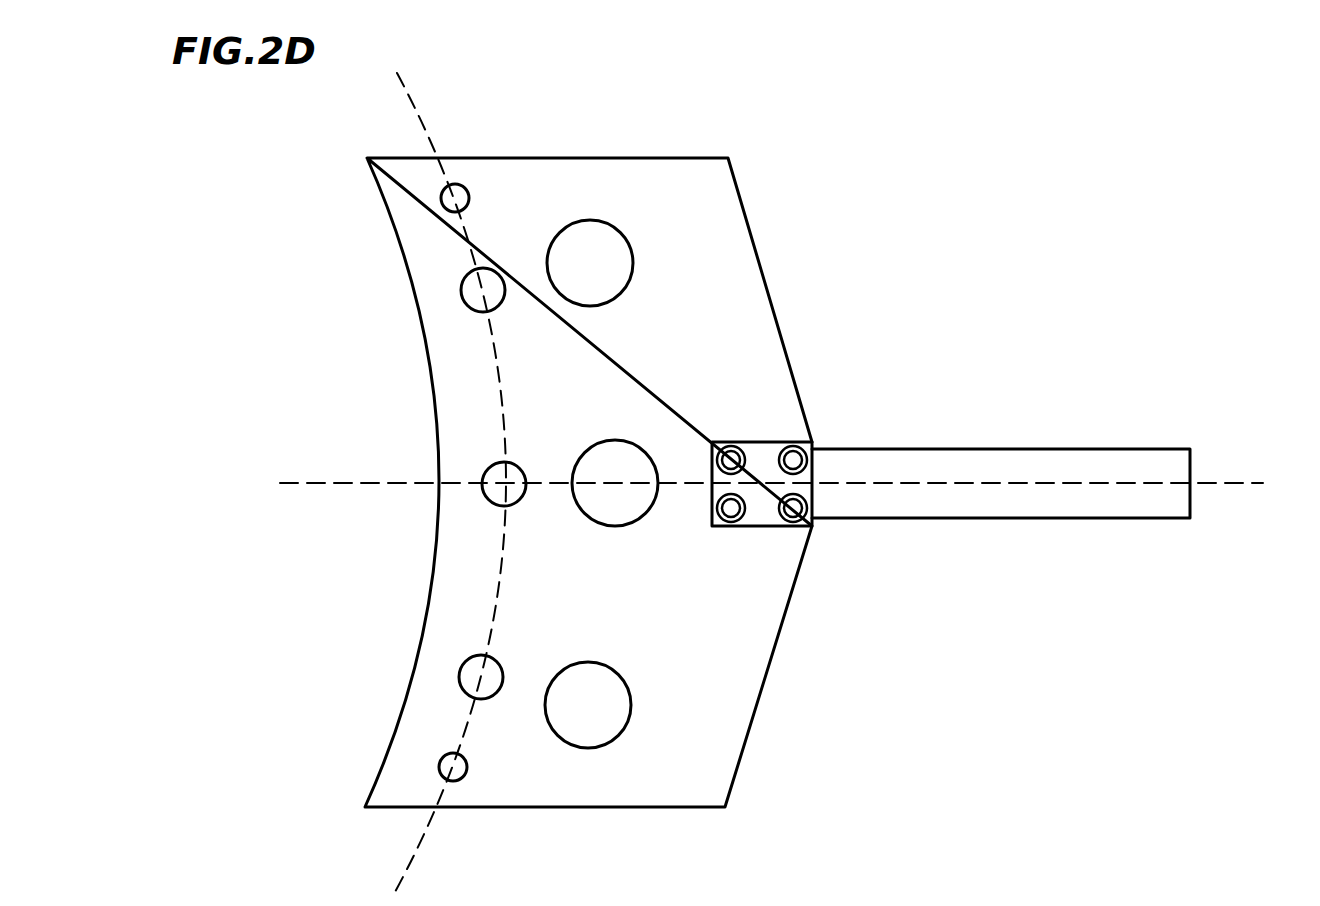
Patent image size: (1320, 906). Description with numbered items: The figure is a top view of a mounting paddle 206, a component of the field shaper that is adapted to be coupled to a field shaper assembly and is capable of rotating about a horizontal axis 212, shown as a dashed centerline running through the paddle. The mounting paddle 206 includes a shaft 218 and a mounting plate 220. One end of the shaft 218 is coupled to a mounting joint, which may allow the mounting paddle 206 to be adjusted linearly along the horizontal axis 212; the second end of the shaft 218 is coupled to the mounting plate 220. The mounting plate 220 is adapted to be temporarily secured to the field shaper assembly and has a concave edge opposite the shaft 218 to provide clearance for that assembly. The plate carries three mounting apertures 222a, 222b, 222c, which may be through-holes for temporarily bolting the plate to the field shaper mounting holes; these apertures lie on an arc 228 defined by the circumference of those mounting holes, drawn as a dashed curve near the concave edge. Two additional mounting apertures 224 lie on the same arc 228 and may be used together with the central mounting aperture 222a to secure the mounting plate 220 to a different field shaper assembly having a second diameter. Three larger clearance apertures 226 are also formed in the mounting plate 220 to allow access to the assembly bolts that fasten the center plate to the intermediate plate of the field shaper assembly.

The mounting paddle 206 is at (883, 248).
The horizontal axis 212 is at (1228, 484).
The shaft 218 is at (1043, 449).
The mounting plate 220 is at (790, 361).
The mounting aperture 222a is at (516, 463).
The mounting aperture 222b is at (487, 270).
The mounting aperture 222c is at (499, 660).
The additional mounting apertures 224 is at (461, 184).
The clearance apertures 226 is at (633, 252).
The arc 228 is at (418, 110).